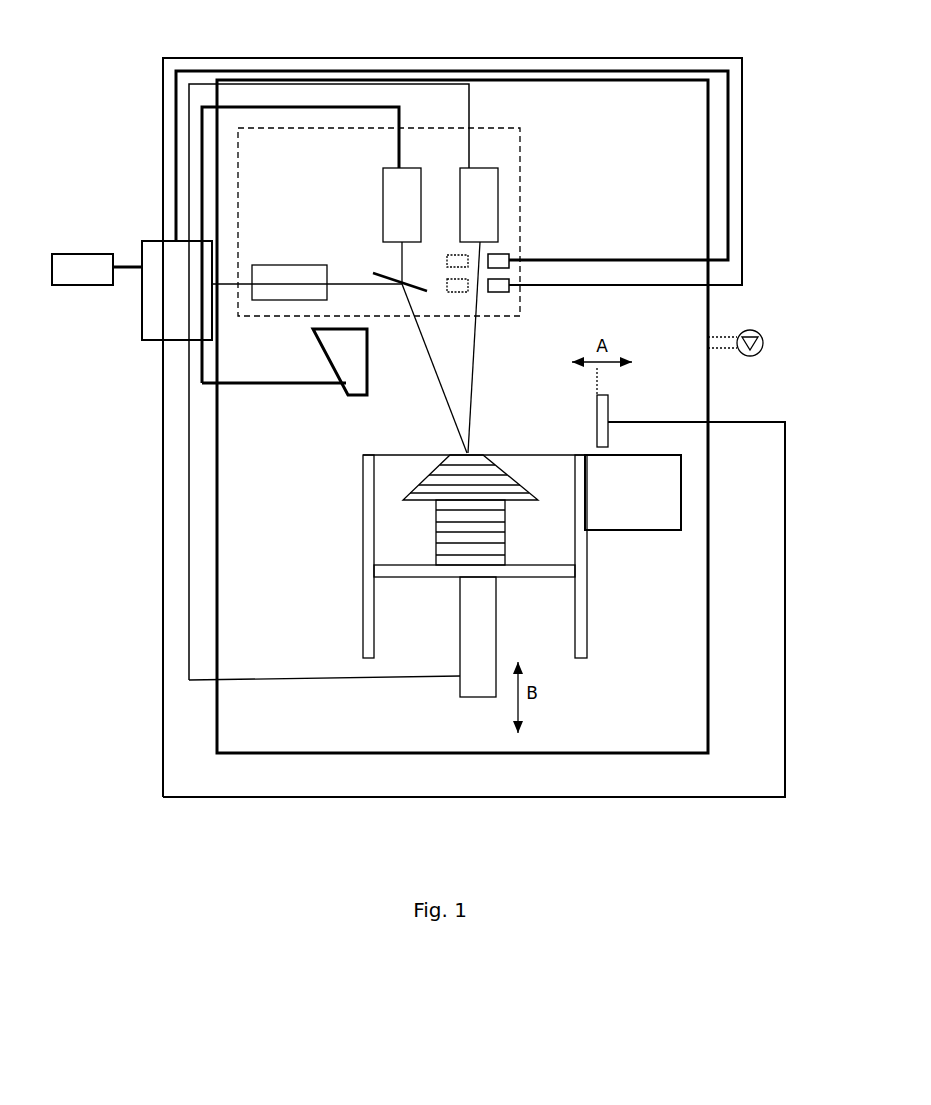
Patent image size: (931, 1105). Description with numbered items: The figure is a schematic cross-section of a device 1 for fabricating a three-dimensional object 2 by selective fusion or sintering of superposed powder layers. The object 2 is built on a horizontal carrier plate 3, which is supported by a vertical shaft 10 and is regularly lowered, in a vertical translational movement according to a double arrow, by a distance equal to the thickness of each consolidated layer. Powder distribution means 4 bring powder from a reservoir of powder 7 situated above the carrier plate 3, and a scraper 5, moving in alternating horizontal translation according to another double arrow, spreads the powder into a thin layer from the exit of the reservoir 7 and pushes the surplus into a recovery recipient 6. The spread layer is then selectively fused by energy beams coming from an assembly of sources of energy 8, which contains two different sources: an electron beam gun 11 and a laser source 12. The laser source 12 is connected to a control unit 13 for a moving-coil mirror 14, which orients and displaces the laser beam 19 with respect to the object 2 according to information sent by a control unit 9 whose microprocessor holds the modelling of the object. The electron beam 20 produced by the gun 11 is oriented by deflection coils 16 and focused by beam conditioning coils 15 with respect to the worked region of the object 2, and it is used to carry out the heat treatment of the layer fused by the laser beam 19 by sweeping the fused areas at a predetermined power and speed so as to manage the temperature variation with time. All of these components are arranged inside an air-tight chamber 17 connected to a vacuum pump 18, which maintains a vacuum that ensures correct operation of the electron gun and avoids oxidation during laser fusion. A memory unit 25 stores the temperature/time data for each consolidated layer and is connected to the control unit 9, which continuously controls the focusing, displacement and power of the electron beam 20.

The device for fabricating a three-dimensional object 1 is at (178, 862).
The three-dimensional object 2 is at (484, 452).
The horizontal carrier plate 3 is at (417, 568).
The powder distribution means 4 is at (642, 347).
The scraper 5 is at (610, 410).
The recovery recipient 6 is at (628, 505).
The reservoir of powder 7 is at (350, 393).
The assembly of sources of energy 8 is at (332, 158).
The control unit 9 is at (162, 297).
The vertical shaft 10 is at (472, 665).
The electron beam gun 11 is at (477, 183).
The laser source 12 is at (268, 270).
The control unit for moving-coil mirror 13 is at (407, 183).
The moving-coil mirror 14 is at (397, 282).
The beam conditioning coils 15 is at (502, 262).
The deflection coils 16 is at (503, 280).
The air-tight chamber 17 is at (710, 408).
The vacuum pump 18 is at (763, 337).
The laser beam 19 is at (440, 388).
The electron beam 20 is at (477, 365).
The memory unit 25 is at (88, 252).